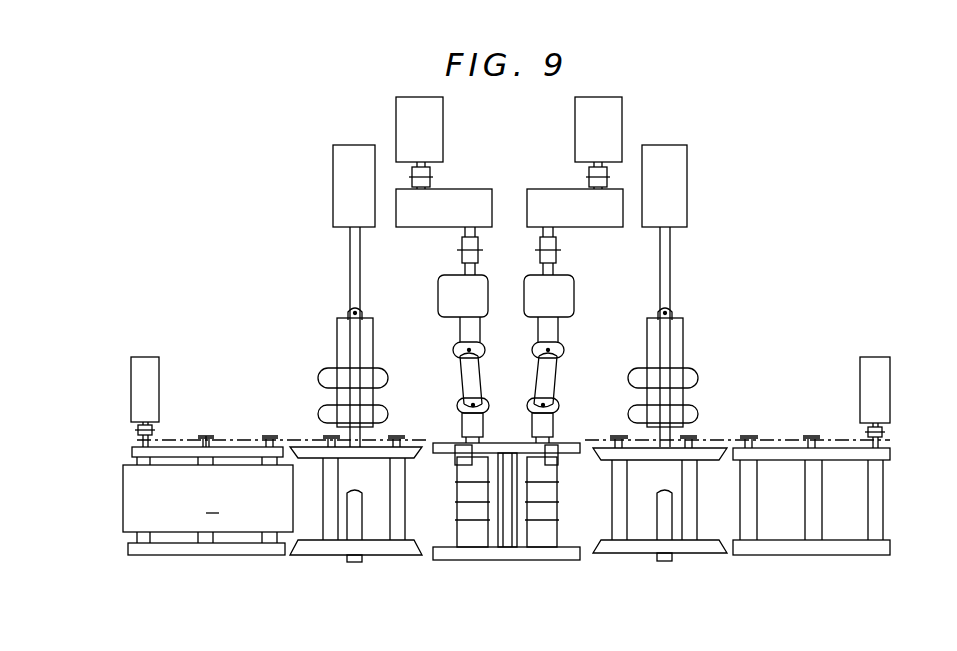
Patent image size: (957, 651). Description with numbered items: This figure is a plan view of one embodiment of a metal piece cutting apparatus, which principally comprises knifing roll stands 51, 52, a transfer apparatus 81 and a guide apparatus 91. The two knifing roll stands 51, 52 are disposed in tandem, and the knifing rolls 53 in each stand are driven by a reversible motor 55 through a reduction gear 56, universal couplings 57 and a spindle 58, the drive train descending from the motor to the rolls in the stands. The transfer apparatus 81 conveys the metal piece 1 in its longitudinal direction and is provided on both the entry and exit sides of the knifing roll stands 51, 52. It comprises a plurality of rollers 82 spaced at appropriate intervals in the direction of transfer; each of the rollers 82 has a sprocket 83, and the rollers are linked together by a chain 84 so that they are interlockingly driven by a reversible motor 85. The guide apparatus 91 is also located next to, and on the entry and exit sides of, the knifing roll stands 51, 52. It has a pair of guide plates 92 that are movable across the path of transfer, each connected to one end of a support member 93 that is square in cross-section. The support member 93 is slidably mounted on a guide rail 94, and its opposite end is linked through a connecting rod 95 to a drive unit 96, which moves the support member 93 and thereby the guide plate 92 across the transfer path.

The metal piece 1 is at (208, 498).
The knifing roll stand 51 is at (480, 553).
The knifing roll stand 52 is at (547, 553).
The knifing roll 53 is at (467, 530).
The reversible motor 55 is at (615, 112).
The reduction gear 56 is at (564, 258).
The universal coupling 57 is at (559, 347).
The spindle 58 is at (548, 368).
The transfer apparatus 81 is at (212, 367).
The roller 82 is at (268, 537).
The sprocket 83 is at (207, 437).
The chain 84 is at (250, 438).
The reversible motor 85 is at (143, 367).
The guide apparatus 91 is at (499, 296).
The guide plate 92 is at (377, 452).
The support member 93 is at (355, 337).
The guide rail 94 is at (365, 322).
The connecting rod 95 is at (355, 260).
The drive unit 96 is at (345, 195).